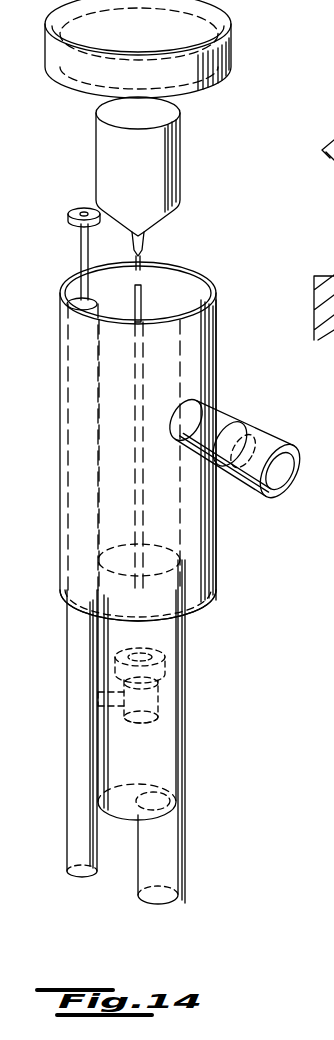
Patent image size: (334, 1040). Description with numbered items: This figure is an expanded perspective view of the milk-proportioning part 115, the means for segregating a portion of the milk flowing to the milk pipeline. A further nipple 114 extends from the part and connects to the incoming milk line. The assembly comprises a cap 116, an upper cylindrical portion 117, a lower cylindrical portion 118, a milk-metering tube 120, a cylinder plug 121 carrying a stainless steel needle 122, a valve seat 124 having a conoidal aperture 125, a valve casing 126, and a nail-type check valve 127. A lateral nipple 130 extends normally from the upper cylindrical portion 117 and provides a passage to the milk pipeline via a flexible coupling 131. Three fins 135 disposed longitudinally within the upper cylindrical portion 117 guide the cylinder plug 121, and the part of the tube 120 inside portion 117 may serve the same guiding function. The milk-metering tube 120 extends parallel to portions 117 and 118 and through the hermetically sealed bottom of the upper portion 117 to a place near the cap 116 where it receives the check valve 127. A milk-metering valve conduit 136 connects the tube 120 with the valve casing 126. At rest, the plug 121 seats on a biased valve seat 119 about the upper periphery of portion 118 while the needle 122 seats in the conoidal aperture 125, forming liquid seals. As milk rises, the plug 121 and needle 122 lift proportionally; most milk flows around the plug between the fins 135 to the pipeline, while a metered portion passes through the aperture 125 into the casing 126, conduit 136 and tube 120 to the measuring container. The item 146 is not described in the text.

The further nipple 114 is at (167, 871).
The milk-proportioning part 115 is at (52, 427).
The cap 116 is at (139, 25).
The upper cylindrical portion 117 is at (216, 346).
The lower cylindrical portion 118 is at (150, 775).
The biased valve seat 119 is at (186, 594).
The milk-metering tube 120 is at (68, 306).
The cylinder plug 121 is at (139, 171).
The needle 122 is at (146, 256).
The valve seat 124 is at (175, 679).
The conoidal aperture 125 is at (166, 660).
The valve casing 126 is at (160, 716).
The nail-type check valve 127 is at (76, 246).
The lateral nipple 130 is at (211, 424).
The flexible coupling 131 is at (274, 443).
The fins 135 is at (145, 345).
The milk-metering valve conduit 136 is at (100, 712).
The member 146 is at (312, 280).